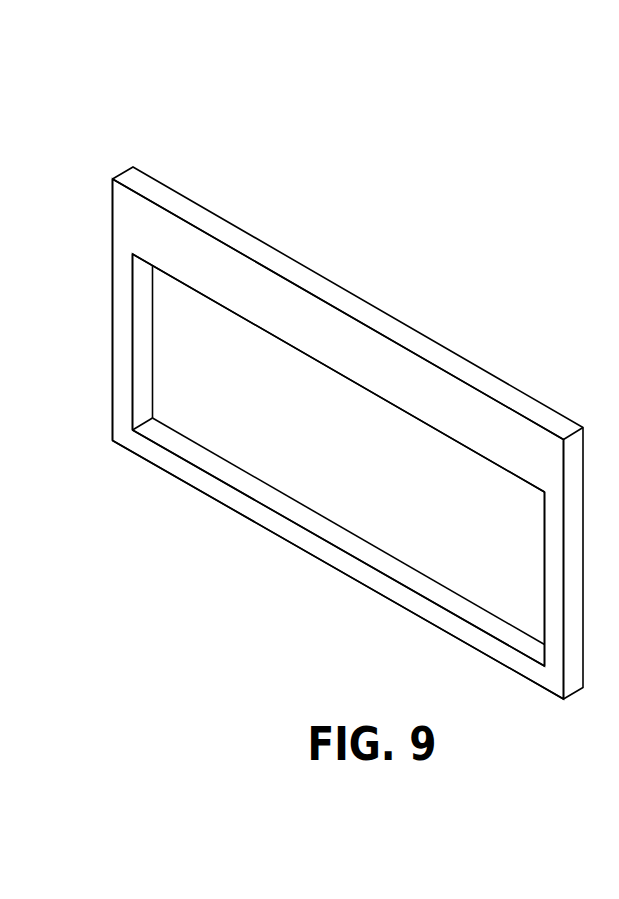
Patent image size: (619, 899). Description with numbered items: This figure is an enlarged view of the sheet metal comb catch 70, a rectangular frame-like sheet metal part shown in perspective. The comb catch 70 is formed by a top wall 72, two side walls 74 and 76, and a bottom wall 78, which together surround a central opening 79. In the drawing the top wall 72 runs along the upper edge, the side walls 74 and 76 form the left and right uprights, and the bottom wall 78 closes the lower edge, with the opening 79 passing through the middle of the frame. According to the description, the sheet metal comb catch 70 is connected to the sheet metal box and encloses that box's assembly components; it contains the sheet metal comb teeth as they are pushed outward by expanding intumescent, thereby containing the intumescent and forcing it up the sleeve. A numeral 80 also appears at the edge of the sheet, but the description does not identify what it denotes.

The sheet metal comb catch 70 is at (123, 124).
The top wall 72 is at (478, 373).
The side wall 74 is at (141, 354).
The side wall 76 is at (571, 616).
The bottom wall 78 is at (307, 542).
The opening 79 is at (376, 462).
The adjacent component 80 is at (608, 124).